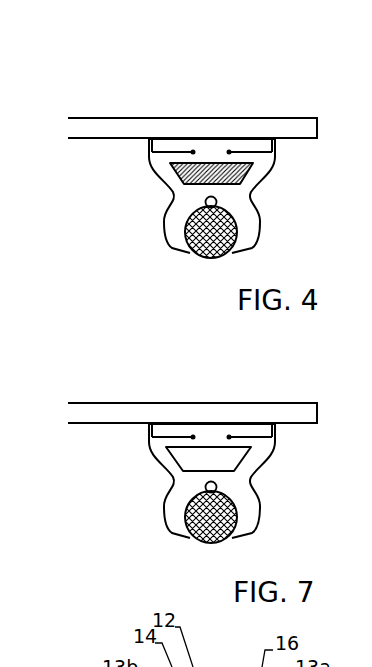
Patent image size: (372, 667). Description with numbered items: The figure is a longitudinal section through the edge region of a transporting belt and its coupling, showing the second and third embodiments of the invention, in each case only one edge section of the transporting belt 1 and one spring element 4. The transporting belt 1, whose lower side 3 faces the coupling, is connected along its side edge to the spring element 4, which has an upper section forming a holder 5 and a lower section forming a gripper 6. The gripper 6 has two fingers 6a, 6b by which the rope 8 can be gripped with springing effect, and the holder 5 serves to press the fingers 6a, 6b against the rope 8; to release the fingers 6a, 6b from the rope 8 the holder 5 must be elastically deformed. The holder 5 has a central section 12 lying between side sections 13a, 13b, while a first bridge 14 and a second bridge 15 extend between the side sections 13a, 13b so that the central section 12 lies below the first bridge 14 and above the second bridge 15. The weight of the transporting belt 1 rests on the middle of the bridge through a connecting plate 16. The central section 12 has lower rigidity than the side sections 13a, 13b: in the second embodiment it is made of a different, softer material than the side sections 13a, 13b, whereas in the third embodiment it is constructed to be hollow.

In FIG. 4, the transporting belt 1 is at (102, 122).
In FIG. 7, the transporting belt 1 is at (100, 415).
In FIG. 4, the lower side 3 is at (85, 143).
In FIG. 7, the lower side 3 is at (85, 428).
In FIG. 4, the spring element 4 is at (155, 207).
In FIG. 7, the spring element 4 is at (152, 503).
In FIG. 4, the holder 5 is at (140, 173).
In FIG. 7, the holder 5 is at (138, 466).
In FIG. 4, the gripper 6 is at (259, 228).
In FIG. 7, the gripper 6 is at (258, 517).
In FIG. 4, the finger 6a is at (250, 248).
In FIG. 7, the finger 6a is at (246, 531).
In FIG. 4, the finger 6b is at (172, 244).
In FIG. 7, the finger 6b is at (173, 528).
In FIG. 4, the rope 8 is at (208, 259).
In FIG. 7, the rope 8 is at (207, 545).
In FIG. 4, the central section 12 is at (209, 166).
In FIG. 7, the central section 12 is at (208, 460).
In FIG. 4, the side section 13a is at (267, 158).
In FIG. 7, the side section 13a is at (266, 450).
In FIG. 4, the side section 13b is at (156, 157).
In FIG. 7, the side section 13b is at (156, 450).
In FIG. 4, the first bridge 14 is at (186, 157).
In FIG. 7, the first bridge 14 is at (180, 445).
In FIG. 4, the second bridge 15 is at (212, 192).
In FIG. 7, the second bridge 15 is at (210, 478).
In FIG. 4, the connecting plate 16 is at (242, 147).
In FIG. 7, the connecting plate 16 is at (231, 432).